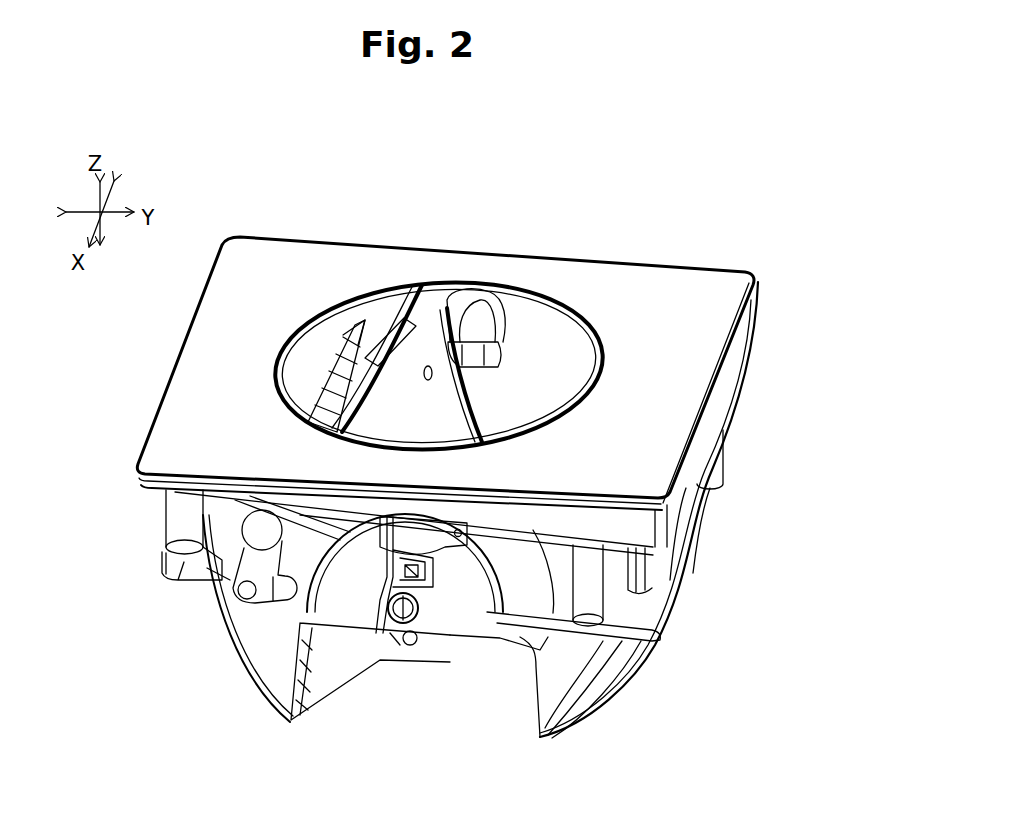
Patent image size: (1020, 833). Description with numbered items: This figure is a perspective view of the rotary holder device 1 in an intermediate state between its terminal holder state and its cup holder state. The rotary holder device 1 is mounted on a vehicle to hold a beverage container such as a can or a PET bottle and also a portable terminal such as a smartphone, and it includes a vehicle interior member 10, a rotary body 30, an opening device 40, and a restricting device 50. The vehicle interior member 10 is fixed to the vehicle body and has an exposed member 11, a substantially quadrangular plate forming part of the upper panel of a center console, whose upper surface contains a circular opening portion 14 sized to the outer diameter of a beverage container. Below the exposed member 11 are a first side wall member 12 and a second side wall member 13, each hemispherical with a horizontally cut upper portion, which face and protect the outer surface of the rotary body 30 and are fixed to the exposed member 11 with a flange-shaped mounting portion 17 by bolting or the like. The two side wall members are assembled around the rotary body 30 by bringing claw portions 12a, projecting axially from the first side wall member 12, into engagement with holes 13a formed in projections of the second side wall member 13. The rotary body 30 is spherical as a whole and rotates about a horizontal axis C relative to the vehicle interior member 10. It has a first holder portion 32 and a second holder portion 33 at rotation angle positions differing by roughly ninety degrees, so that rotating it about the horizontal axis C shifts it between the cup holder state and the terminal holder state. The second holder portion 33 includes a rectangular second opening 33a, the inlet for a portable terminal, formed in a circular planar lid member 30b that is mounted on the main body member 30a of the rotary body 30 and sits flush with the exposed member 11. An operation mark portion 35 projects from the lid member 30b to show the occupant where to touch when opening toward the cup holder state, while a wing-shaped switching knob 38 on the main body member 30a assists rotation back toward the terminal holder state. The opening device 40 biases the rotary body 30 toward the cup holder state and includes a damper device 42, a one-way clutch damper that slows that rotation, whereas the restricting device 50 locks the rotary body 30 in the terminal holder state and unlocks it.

The rotary holder device 1 is at (463, 469).
The vehicle interior member 10 is at (463, 480).
The exposed member 11 is at (697, 335).
The first side wall member 12 is at (587, 687).
The claw portion 12a is at (449, 556).
The second side wall member 13 is at (273, 670).
The hole 13a is at (400, 577).
The opening portion 14 is at (420, 445).
The flange-shaped mounting portion 17 is at (205, 565).
The rotary body 30 is at (316, 465).
The main body member 30a is at (452, 293).
The lid member 30b is at (303, 390).
The first holder portion 32 is at (543, 377).
The second holder portion 33 is at (350, 335).
The second opening 33a is at (300, 383).
The operation mark portion 35 is at (395, 320).
The switching knob 38 is at (480, 290).
The opening device 40 is at (400, 652).
The damper device 42 is at (478, 590).
The restricting device 50 is at (248, 607).
The horizontal axis C is at (410, 628).